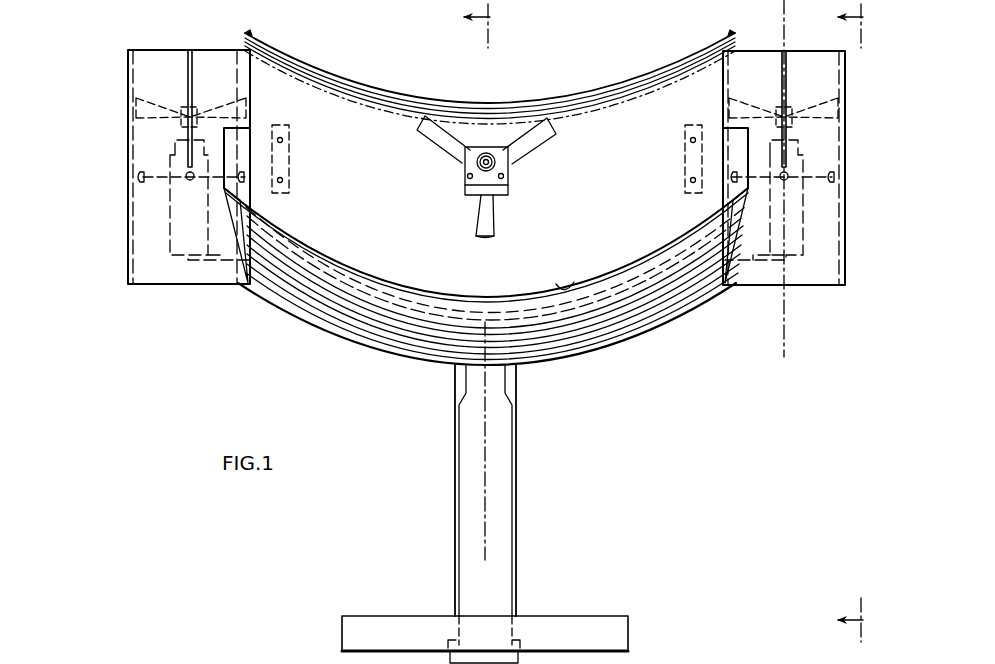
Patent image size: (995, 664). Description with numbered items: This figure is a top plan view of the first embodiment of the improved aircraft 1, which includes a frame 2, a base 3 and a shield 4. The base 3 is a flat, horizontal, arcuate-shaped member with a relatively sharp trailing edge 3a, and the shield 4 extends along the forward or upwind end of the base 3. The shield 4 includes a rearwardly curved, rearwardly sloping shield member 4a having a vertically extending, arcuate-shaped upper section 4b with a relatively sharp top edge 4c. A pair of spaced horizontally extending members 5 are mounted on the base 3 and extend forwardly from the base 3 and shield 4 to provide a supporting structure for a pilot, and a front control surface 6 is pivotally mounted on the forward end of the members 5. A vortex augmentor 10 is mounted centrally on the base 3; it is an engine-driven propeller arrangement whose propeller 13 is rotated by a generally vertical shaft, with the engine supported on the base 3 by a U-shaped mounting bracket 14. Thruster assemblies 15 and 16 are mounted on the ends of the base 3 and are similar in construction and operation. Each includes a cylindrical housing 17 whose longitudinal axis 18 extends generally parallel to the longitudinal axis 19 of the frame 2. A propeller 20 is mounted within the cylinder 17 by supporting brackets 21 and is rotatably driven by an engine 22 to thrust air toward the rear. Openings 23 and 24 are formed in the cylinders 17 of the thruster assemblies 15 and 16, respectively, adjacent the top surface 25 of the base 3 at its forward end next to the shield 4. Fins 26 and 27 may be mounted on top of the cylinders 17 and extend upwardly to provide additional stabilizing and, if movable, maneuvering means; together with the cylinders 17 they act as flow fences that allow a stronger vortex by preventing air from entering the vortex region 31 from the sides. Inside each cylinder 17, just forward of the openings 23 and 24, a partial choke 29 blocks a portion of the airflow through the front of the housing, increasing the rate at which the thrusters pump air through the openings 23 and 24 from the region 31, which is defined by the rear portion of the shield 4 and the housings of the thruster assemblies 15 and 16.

The aircraft 1 is at (272, 330).
The frame 2 is at (485, 469).
The base 3 is at (345, 104).
The trailing edge 3a is at (414, 105).
The shield 4 is at (486, 296).
The shield member 4a is at (612, 330).
The upper section 4b is at (577, 276).
The top edge 4c is at (310, 250).
The horizontally extending members 5 is at (453, 468).
The front control surface 6 is at (558, 630).
The vortex augmentor 10 is at (484, 152).
The propeller 13 is at (533, 133).
The U-shaped mounting bracket 14 is at (508, 183).
The thruster assembly 15 is at (828, 178).
The thruster assembly 16 is at (143, 172).
The cylindrical housing 17 is at (150, 146).
The longitudinal axis 18 is at (786, 322).
The longitudinal axis 19 is at (487, 478).
The propeller 20 is at (140, 100).
The supporting brackets 21 is at (160, 182).
The engine 22 is at (165, 226).
The opening 23 is at (745, 147).
The opening 24 is at (226, 156).
The top surface 25 is at (622, 118).
The fin 26 is at (782, 80).
The fin 27 is at (190, 80).
The partial choke 29 is at (218, 285).
The vortex region 31 is at (442, 278).